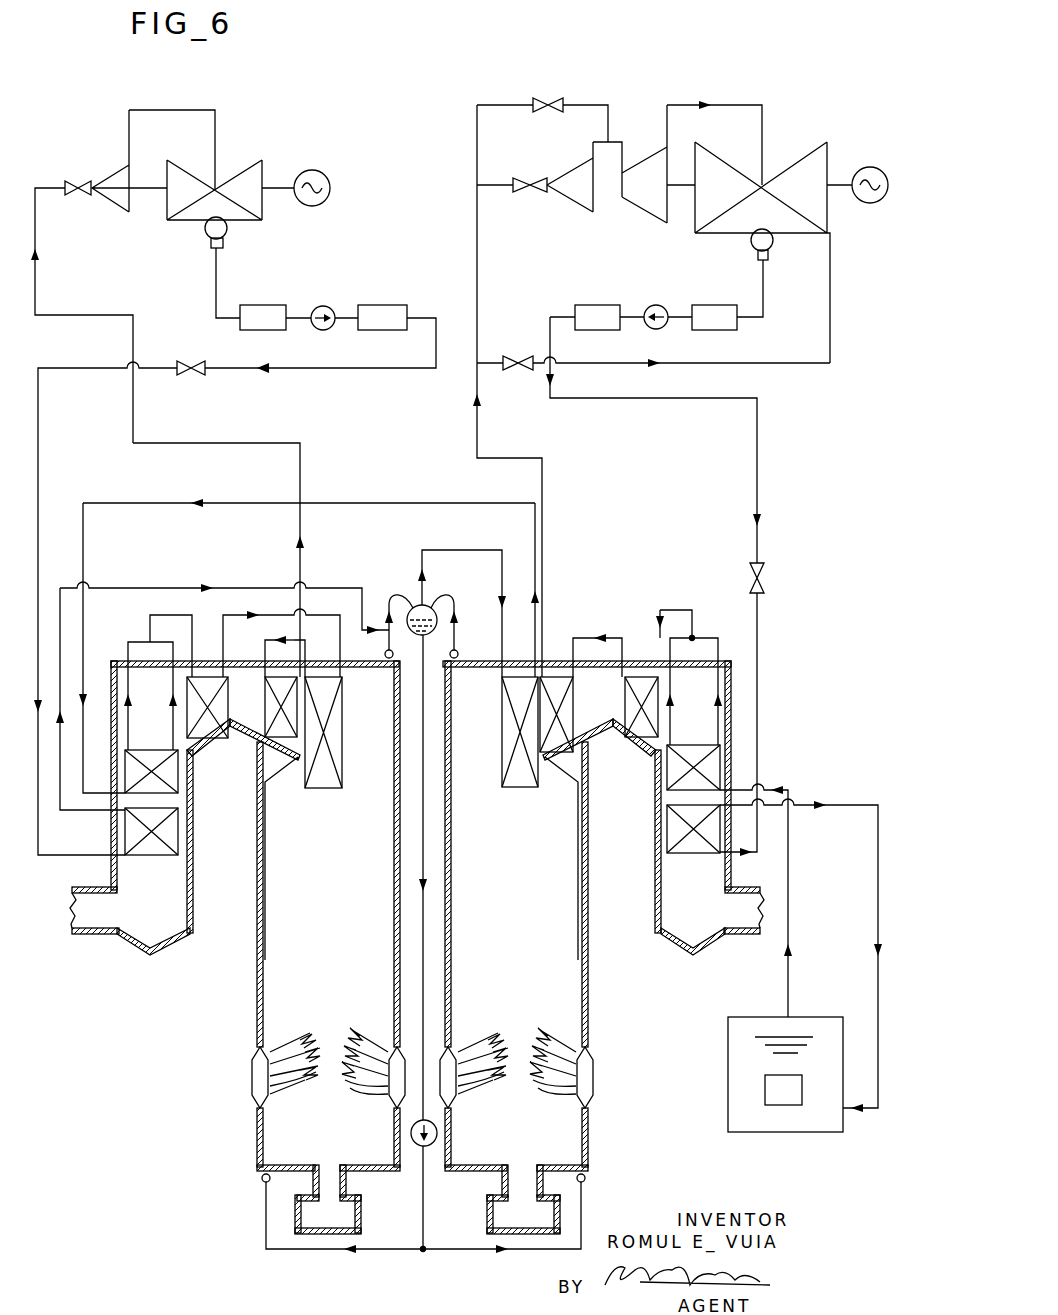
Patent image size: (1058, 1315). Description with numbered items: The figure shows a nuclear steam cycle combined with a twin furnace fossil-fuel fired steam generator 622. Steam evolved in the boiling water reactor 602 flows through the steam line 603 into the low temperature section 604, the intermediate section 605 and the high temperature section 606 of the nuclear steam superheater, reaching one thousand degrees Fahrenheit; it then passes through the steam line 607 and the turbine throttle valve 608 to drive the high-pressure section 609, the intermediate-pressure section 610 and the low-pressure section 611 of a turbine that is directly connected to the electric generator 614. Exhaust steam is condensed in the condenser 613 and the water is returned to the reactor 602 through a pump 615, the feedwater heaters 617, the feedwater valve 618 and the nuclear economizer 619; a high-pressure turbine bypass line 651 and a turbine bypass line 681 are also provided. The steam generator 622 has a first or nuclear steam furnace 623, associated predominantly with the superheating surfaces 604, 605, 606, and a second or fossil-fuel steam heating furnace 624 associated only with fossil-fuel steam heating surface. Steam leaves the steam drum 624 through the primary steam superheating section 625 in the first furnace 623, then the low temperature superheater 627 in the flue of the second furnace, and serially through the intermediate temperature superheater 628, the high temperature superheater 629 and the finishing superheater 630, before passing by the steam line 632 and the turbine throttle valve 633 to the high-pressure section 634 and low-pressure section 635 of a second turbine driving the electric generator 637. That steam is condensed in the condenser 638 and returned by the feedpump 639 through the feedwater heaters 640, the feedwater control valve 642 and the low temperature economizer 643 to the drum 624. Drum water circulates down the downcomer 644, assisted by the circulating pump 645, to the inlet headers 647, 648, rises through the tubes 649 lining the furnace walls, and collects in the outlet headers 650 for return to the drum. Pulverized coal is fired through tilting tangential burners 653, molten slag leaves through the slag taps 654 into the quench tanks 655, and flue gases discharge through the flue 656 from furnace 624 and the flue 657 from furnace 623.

The boiling water reactor 602 is at (728, 1077).
The steam line 603 is at (788, 980).
The low temperature section of nuclear steam superheater 604 is at (667, 770).
The intermediate section of nuclear steam superheater 605 is at (640, 677).
The high temperature section of nuclear steam superheater 606 is at (555, 677).
The steam line 607 is at (477, 155).
The turbine throttle valve 608 is at (520, 180).
The high-pressure section of turbine 609 is at (590, 215).
The intermediate-pressure section of turbine 610 is at (656, 222).
The low-pressure section of turbine 611 is at (730, 130).
The condenser 613 is at (751, 240).
The electric generator 614 is at (865, 168).
The pump 615 is at (660, 305).
The feedwater heaters 617 is at (585, 305).
The feedwater valve 618 is at (768, 578).
The nuclear economizer 619 is at (667, 833).
The fossil-fuel steam generator 622 is at (270, 1136).
The nuclear steam furnace 623 is at (533, 1136).
The fossil-fuel steam heating furnace 624 is at (412, 608).
The primary steam superheating section 625 is at (503, 770).
The low temperature superheater 627 is at (175, 780).
The intermediate temperature superheater 628 is at (203, 675).
The high temperature superheater 629 is at (324, 788).
The finishing superheater 630 is at (282, 737).
The steam line 632 is at (212, 443).
The turbine throttle valve 633 is at (80, 180).
The high-pressure section of turbine 634 is at (128, 215).
The low-pressure section of turbine 635 is at (262, 162).
The electric generator 637 is at (318, 172).
The condenser 638 is at (228, 228).
The feedpump 639 is at (330, 308).
The feedwater heaters 640 is at (265, 305).
The feedwater control valve 642 is at (190, 362).
The low temperature economizer 643 is at (173, 835).
The downcomer 644 is at (425, 935).
The circulating pump 645 is at (417, 1147).
The inlet header 647 is at (585, 1178).
The inlet header 648 is at (262, 1178).
The tubes 649 is at (270, 1004).
The outlet headers 650 is at (458, 650).
The high-pressure turbine bypass line 651 is at (500, 105).
The tilting tangential burners 653 is at (252, 1075).
The slag taps 654 is at (322, 1172).
The quench tanks 655 is at (312, 1232).
The flue 656 is at (168, 925).
The flue 657 is at (713, 925).
The turbine bypass line 681 is at (782, 364).